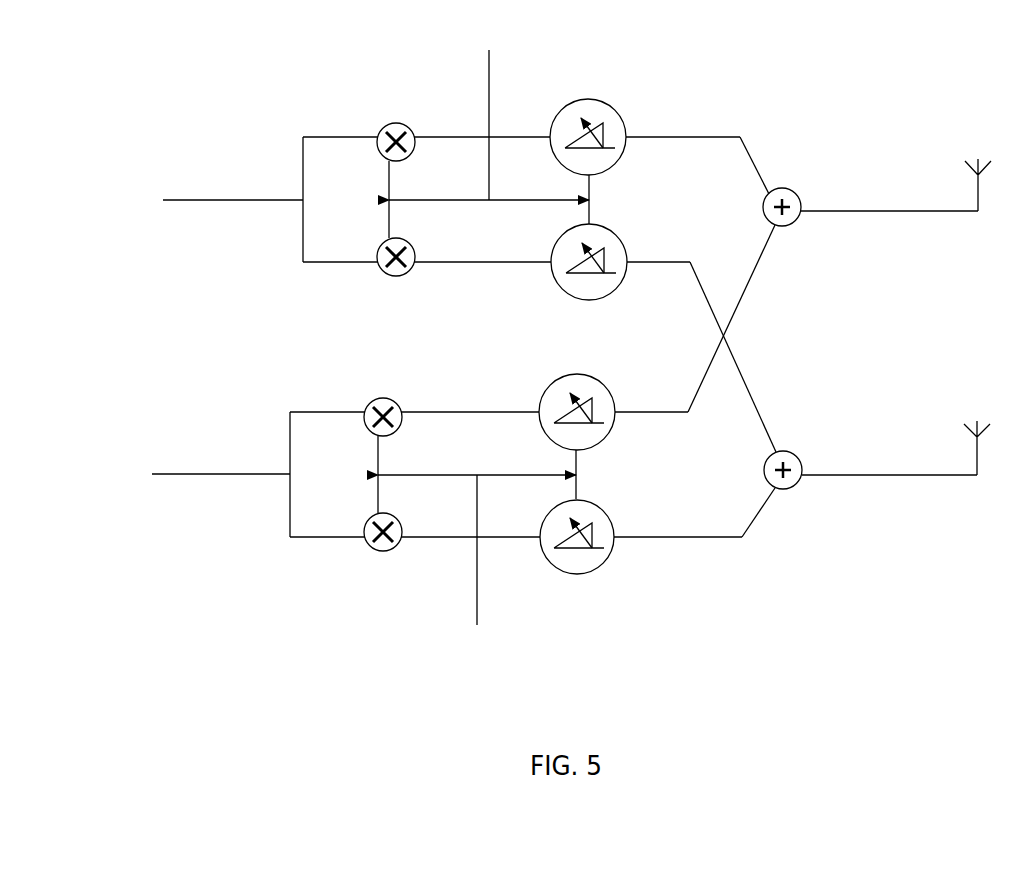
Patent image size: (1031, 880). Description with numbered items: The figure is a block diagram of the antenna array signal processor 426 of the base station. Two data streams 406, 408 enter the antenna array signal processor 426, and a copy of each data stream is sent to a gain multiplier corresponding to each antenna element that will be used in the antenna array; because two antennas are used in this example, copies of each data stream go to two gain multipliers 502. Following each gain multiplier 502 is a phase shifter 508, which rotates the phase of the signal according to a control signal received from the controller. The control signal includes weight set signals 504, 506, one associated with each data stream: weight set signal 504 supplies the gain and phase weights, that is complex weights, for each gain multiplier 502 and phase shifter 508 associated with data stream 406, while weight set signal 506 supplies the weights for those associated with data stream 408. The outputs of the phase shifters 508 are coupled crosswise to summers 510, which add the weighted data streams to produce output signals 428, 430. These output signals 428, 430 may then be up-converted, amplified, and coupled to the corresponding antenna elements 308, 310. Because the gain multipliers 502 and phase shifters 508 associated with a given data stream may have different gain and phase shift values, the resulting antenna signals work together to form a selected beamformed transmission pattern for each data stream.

The antenna array signal processor 426 is at (205, 51).
The data stream 406 is at (225, 199).
The data stream 408 is at (213, 473).
The gain multiplier 502 is at (399, 123).
The weight set signal 504 is at (491, 74).
The weight set signal 506 is at (479, 598).
The phase shifter 508 is at (603, 99).
The summer 510 is at (789, 223).
The output signal 428 is at (878, 211).
The output signal 430 is at (880, 474).
The antenna element 308 is at (942, 213).
The antenna element 310 is at (940, 477).